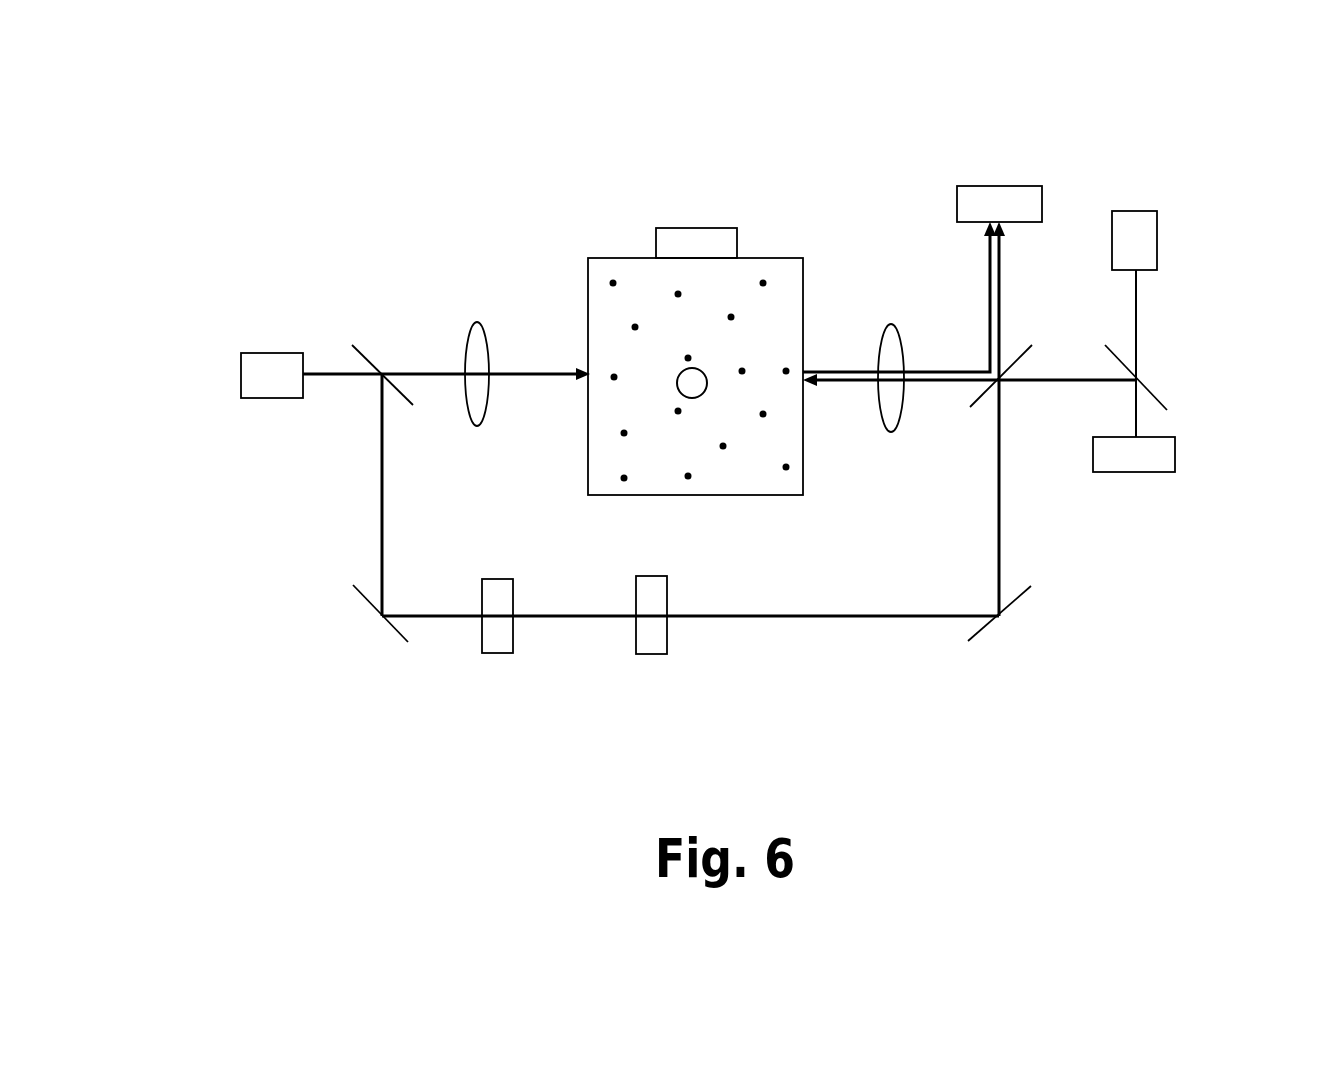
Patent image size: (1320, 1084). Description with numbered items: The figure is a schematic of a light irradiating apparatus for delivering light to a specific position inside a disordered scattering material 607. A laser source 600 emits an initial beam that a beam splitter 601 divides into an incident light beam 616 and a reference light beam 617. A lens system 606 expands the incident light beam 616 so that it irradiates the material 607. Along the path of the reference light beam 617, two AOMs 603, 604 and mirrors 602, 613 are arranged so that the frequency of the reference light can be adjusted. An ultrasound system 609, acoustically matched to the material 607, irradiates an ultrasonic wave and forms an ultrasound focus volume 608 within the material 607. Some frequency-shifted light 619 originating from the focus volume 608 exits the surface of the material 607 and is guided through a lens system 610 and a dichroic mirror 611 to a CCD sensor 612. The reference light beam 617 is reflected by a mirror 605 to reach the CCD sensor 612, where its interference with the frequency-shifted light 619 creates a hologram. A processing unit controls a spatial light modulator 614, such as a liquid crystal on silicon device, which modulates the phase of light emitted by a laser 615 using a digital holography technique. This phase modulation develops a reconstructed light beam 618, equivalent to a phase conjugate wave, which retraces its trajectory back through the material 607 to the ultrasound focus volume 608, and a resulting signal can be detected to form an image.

The laser source 600 is at (248, 378).
The beam splitter 601 is at (368, 348).
The mirror 602 is at (358, 603).
The AOM 603 is at (495, 638).
The AOM 604 is at (648, 638).
The mirror 605 is at (980, 635).
The lens system 606 is at (472, 402).
The material 607 is at (738, 477).
The ultrasound focus volume 608 is at (698, 376).
The ultrasound system 609 is at (677, 238).
The lens system 610 is at (893, 335).
The dichroic mirror 611 is at (973, 405).
The CCD sensor 612 is at (975, 205).
The mirror 613 is at (1152, 385).
The spatial light modulator 614 is at (1152, 452).
The laser 615 is at (1137, 237).
The incident light beam 616 is at (530, 377).
The reference light beam 617 is at (1000, 493).
The reconstructed light beam 618 is at (837, 380).
The frequency-shifted light 619 is at (841, 370).